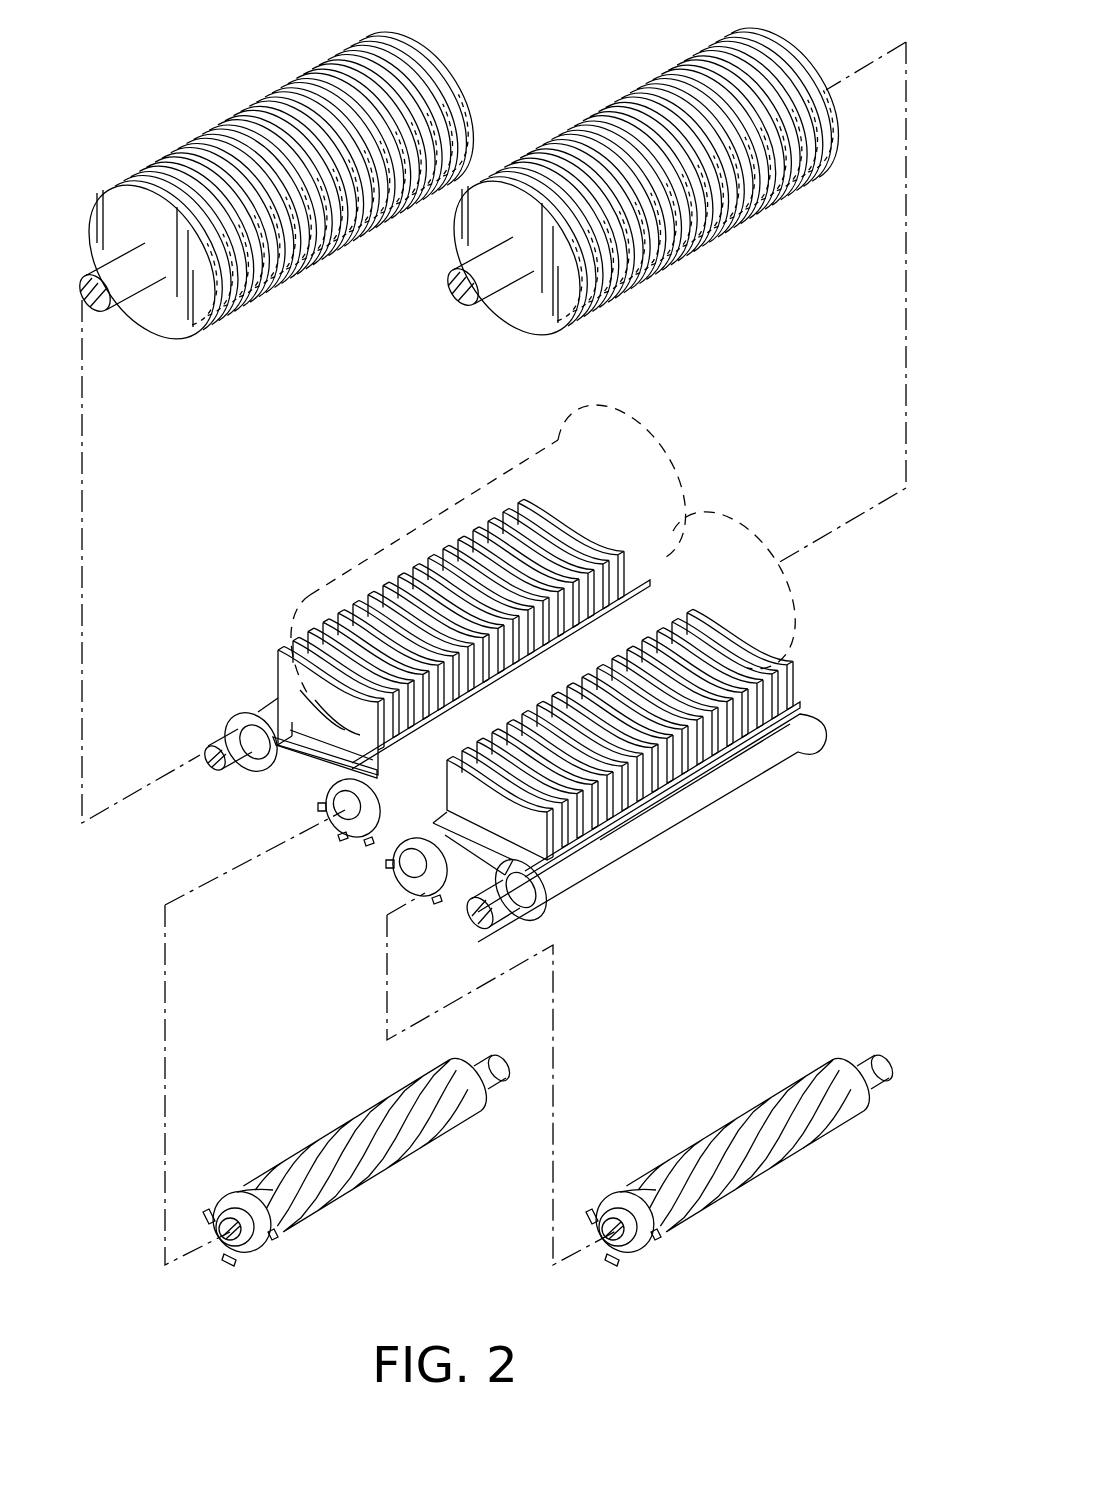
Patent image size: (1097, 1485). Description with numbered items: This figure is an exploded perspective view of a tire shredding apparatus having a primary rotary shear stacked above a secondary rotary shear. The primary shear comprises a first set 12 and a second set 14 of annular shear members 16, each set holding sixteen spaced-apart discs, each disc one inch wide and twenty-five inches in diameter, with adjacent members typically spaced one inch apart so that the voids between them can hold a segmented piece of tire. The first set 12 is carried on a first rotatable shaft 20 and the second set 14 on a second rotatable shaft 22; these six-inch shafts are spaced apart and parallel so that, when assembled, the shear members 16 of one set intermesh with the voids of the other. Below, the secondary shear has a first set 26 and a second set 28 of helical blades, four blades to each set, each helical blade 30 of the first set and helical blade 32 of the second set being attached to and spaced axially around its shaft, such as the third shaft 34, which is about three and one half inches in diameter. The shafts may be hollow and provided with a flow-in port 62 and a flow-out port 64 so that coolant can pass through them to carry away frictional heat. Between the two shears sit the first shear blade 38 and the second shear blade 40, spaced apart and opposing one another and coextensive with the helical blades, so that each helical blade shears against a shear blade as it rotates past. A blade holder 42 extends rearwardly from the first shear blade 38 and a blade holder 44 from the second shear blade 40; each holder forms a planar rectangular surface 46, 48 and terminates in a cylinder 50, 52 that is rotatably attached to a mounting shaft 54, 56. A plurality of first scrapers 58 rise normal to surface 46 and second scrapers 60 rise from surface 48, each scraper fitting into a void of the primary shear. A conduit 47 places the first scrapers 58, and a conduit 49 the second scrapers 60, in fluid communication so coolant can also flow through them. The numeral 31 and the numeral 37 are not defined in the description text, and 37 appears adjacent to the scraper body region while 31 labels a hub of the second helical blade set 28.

The first set of annular shear members 12 is at (478, 98).
The second set of annular shear members 14 is at (832, 70).
The annular shear member 16 is at (137, 182).
The first rotatable shaft 20 is at (115, 318).
The second rotatable shaft 22 is at (458, 252).
The first set of helical blades 26 is at (340, 1183).
The second set of helical blades 28 is at (725, 1181).
The helical blade 30 is at (205, 1212).
The brush hub 31 is at (588, 1212).
The helical blade 32 is at (258, 1255).
The third shaft 34 is at (642, 1255).
The upper comb body 37 is at (450, 631).
The first shear blade 38 is at (324, 810).
The second shear blade 40 is at (648, 743).
The blade holder 42 is at (615, 789).
The blade holder 44 is at (375, 667).
The planar rectangular surface 46 is at (305, 765).
The conduit 47 is at (262, 772).
The planar rectangular surface 48 is at (480, 885).
The conduit 49 is at (575, 880).
The cylinder 50 is at (246, 712).
The cylinder 52 is at (645, 868).
The mounting shaft 54 is at (210, 772).
The mounting shaft 56 is at (478, 922).
The first scrapers 58 is at (543, 515).
The second scrapers 60 is at (778, 702).
The flow-in port 62 is at (228, 1240).
The flow-out port 64 is at (514, 1080).